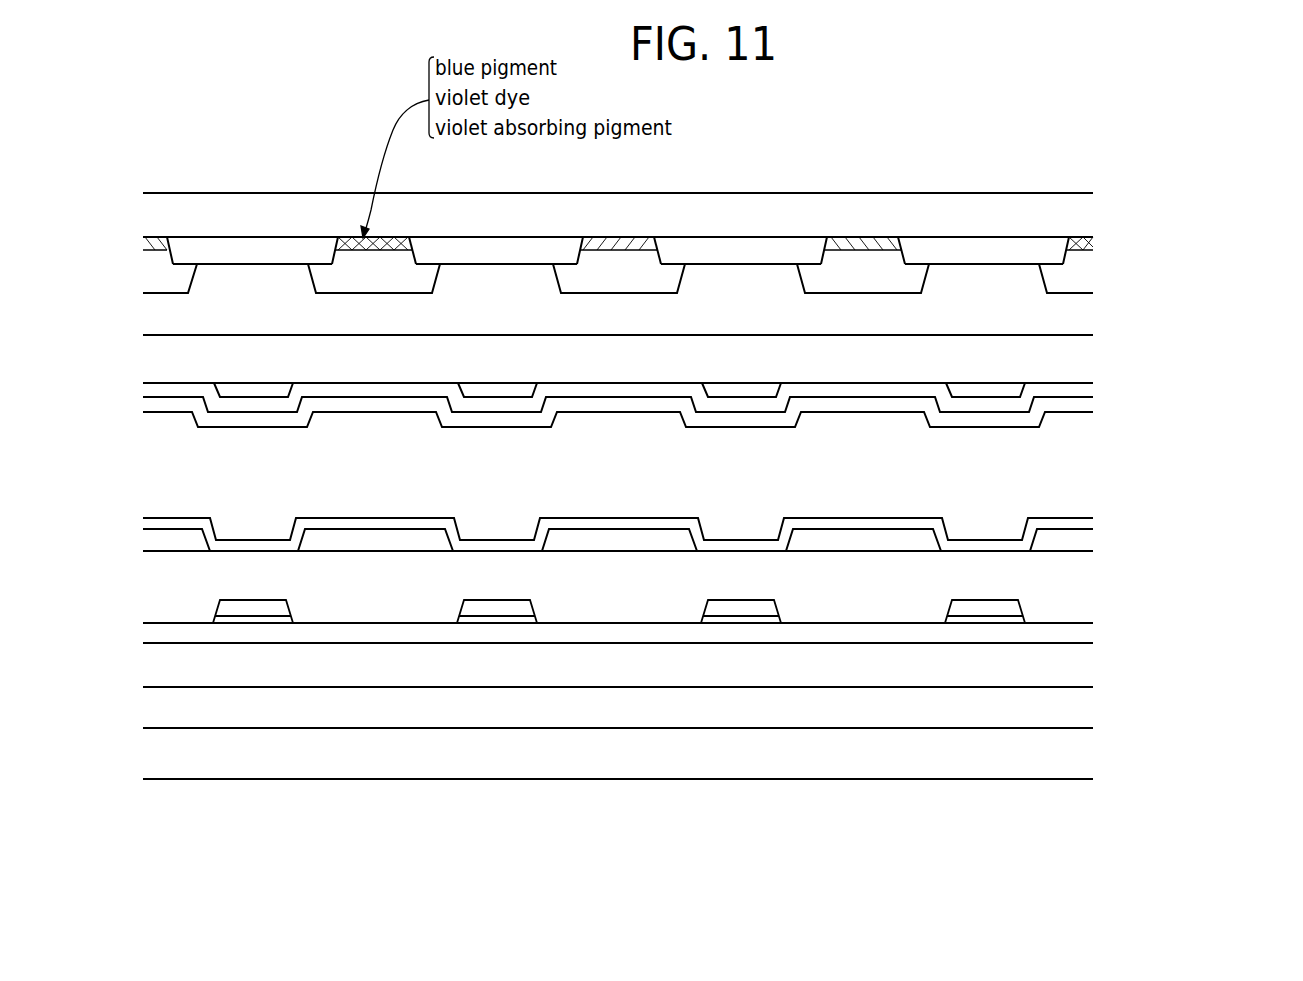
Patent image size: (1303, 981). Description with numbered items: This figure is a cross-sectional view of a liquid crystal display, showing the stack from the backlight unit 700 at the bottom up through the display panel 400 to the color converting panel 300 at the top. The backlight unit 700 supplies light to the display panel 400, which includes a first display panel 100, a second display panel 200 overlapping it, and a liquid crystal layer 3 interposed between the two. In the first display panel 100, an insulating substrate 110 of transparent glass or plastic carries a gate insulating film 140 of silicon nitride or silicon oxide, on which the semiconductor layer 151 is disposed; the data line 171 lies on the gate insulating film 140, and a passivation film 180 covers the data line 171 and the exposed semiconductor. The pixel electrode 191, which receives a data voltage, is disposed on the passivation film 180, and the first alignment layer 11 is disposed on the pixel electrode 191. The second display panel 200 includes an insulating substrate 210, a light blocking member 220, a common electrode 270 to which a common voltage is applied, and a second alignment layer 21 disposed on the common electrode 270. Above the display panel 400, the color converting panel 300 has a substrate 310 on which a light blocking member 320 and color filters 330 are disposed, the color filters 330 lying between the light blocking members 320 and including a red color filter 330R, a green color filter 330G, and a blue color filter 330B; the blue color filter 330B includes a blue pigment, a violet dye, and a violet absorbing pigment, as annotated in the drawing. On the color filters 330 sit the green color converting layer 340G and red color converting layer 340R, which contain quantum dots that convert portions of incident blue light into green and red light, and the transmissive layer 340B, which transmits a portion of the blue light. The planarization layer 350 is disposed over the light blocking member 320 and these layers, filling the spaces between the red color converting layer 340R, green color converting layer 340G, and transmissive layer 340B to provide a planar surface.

The substrate 310 is at (1077, 207).
The color filters 330 is at (1077, 244).
The red color filter 330R is at (595, 240).
The green color filter 330G is at (157, 247).
The blue color filter 330B is at (348, 235).
The planarization layer 350 is at (1077, 312).
The color converting panel 300 is at (1166, 193).
The light blocking member 320 is at (280, 245).
The green color converting layer 340G is at (177, 270).
The transmissive layer 340B is at (403, 265).
The red color converting layer 340R is at (647, 265).
The light blocking member 220 is at (487, 385).
The insulating substrate 210 is at (1077, 363).
The common electrode 270 is at (1077, 392).
The second alignment layer 21 is at (1077, 410).
The second display panel 200 is at (1166, 348).
The display panel 400 is at (1215, 597).
The liquid crystal layer 3 is at (1077, 450).
The first alignment layer 11 is at (1077, 523).
The pixel electrode 191 is at (1077, 540).
The passivation film 180 is at (1077, 585).
The first display panel 100 is at (1166, 500).
The gate insulating film 140 is at (1077, 632).
The insulating substrate 110 is at (1077, 667).
The backlight unit 700 is at (1080, 757).
The semiconductor layer 151 is at (965, 620).
The data line 171 is at (1000, 608).